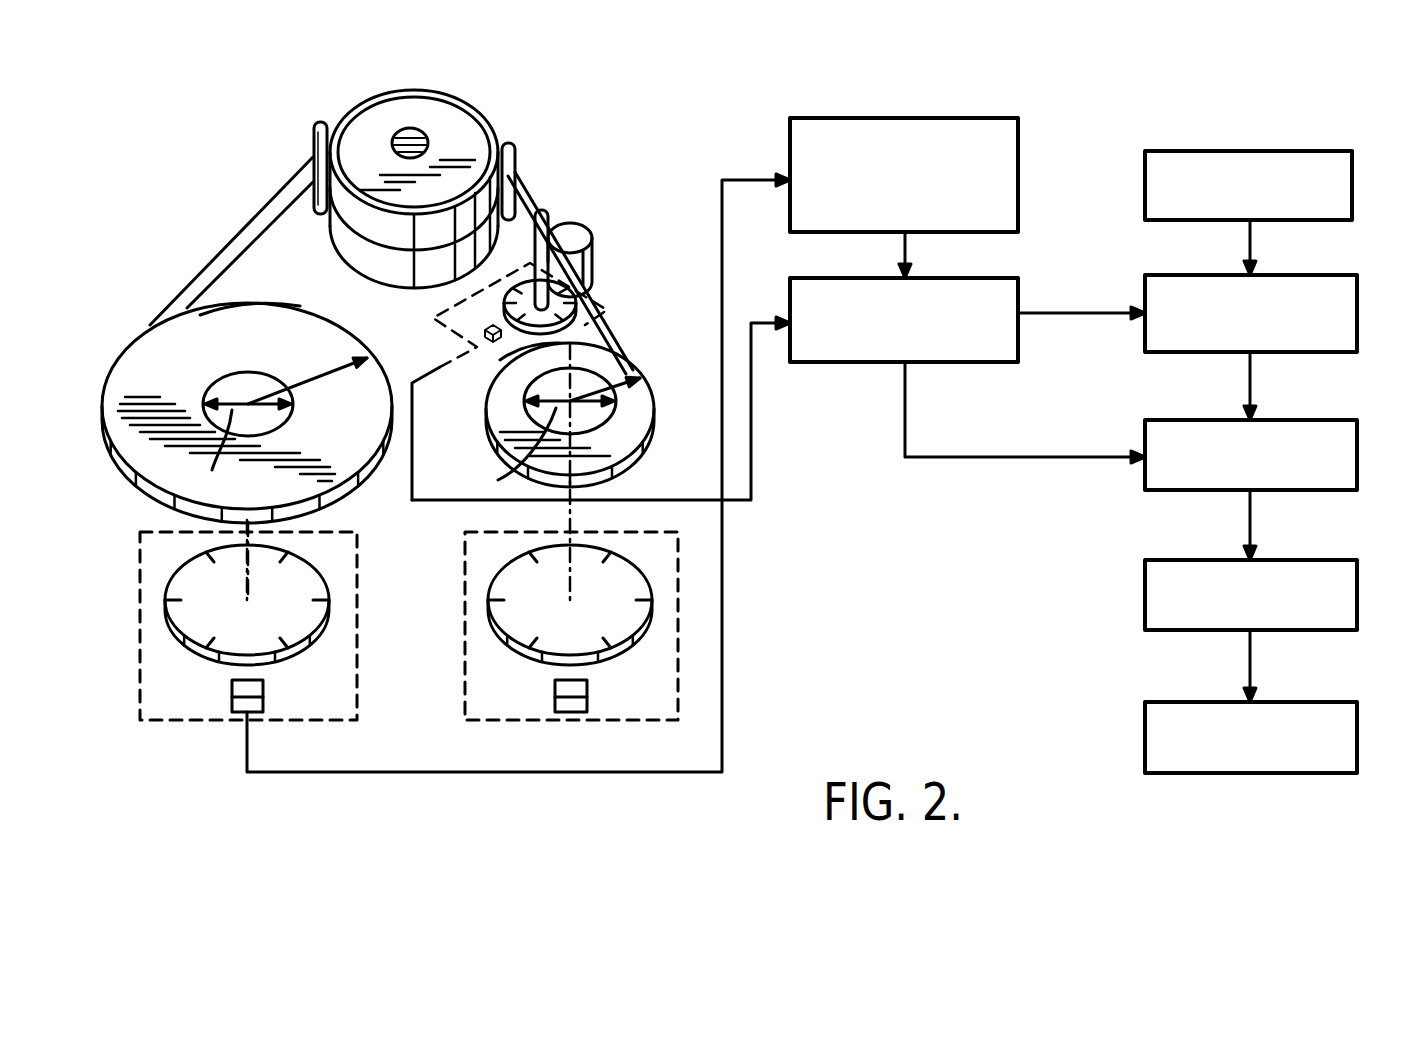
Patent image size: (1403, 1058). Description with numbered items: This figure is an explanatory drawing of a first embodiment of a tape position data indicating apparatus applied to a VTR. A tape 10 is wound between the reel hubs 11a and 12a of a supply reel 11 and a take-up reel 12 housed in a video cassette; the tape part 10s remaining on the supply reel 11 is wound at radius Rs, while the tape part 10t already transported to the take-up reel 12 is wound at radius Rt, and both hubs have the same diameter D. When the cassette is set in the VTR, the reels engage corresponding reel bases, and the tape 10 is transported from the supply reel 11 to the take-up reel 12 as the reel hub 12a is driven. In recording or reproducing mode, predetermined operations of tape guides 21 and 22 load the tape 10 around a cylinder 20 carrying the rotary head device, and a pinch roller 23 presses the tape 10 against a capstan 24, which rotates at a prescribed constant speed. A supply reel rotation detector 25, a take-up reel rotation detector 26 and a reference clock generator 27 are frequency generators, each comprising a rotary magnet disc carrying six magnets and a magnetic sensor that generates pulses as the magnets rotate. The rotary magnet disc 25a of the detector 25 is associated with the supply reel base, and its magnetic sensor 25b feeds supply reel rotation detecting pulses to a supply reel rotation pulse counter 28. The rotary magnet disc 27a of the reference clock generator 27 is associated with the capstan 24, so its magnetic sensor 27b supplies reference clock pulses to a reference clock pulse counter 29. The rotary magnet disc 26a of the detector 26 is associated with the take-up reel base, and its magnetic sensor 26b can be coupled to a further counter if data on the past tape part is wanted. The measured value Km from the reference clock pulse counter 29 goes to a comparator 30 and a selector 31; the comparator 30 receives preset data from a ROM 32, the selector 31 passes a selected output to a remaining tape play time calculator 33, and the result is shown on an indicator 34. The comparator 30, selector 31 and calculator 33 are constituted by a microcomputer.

The tape 10 is at (244, 227).
The tape part on the supply reel 10s is at (257, 332).
The tape part on the take-up reel 10t is at (500, 400).
The supply reel 11 is at (128, 336).
The reel hub 11a is at (272, 417).
The take-up reel 12 is at (630, 340).
The reel hub 12a is at (607, 418).
The cylinder 20 is at (458, 100).
The tape guide 21 is at (320, 122).
The tape guide 22 is at (512, 143).
The pinch roller 23 is at (580, 232).
The capstan 24 is at (542, 210).
The supply reel rotation detector 25 is at (357, 632).
The rotary magnet disc 25a is at (330, 578).
The magnetic sensor 25b is at (263, 692).
The take-up reel rotation detector 26 is at (678, 632).
The rotary magnet disc 26a is at (652, 578).
The magnetic sensor 26b is at (587, 692).
The reference clock generator 27 is at (592, 300).
The rotary magnet disc 27a is at (507, 295).
The magnetic sensor 27b is at (490, 342).
The supply reel rotation pulse counter 28 is at (1018, 143).
The reference clock pulse counter 29 is at (1003, 278).
The comparator 30 is at (1278, 275).
The selector 31 is at (1292, 420).
The ROM 32 is at (1268, 151).
The remaining tape play time calculator 33 is at (1300, 560).
The indicator 34 is at (1298, 702).